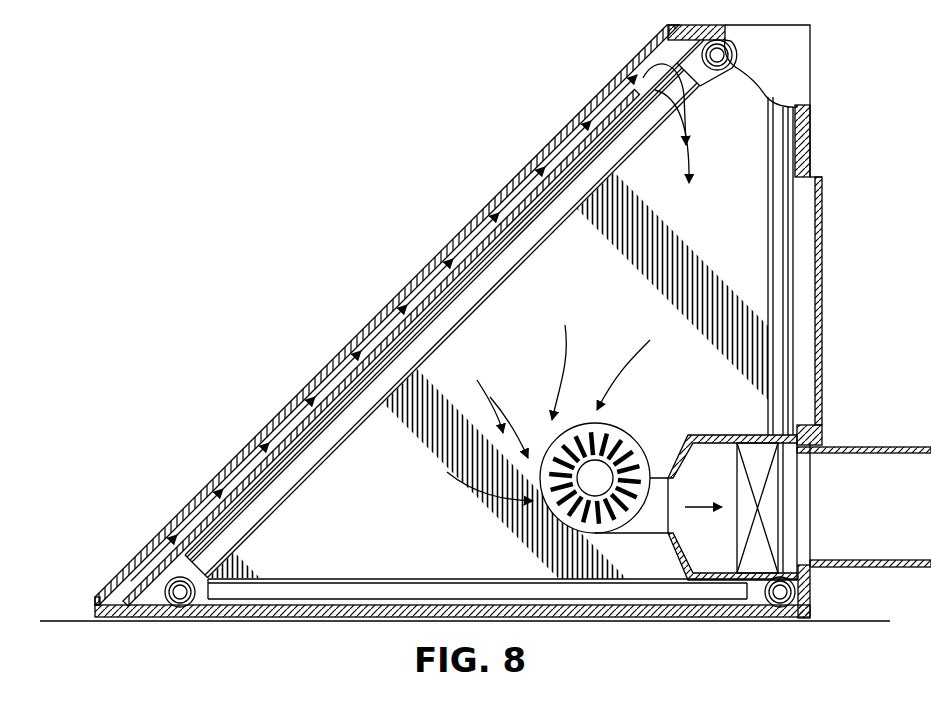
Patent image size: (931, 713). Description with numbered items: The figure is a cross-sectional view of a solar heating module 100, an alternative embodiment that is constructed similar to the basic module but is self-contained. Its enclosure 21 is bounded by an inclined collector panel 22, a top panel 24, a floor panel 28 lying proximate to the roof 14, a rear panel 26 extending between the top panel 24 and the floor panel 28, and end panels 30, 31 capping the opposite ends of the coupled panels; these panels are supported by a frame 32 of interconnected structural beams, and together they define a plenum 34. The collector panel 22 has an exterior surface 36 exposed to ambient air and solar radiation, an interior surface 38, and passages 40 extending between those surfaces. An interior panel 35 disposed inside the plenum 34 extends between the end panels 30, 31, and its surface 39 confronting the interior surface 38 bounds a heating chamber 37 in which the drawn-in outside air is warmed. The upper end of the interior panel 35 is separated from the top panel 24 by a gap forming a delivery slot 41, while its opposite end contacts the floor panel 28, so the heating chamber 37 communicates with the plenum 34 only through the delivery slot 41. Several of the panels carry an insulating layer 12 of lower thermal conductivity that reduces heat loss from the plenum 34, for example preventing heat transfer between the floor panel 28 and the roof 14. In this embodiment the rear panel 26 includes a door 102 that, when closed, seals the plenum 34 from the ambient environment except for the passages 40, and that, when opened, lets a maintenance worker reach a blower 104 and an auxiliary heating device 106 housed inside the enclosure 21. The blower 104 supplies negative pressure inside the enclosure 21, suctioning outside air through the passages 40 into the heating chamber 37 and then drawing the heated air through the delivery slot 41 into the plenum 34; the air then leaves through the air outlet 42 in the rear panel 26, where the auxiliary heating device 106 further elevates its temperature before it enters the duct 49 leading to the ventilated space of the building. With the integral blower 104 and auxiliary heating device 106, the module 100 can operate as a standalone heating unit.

The solar heating module 100 is at (240, 141).
The insulating layer 12 is at (512, 309).
The roof 14 is at (95, 611).
The enclosure 21 is at (384, 328).
The collector panel 22 is at (387, 315).
The top panel 24 is at (684, 27).
The rear panel 26 is at (812, 149).
The floor panel 28 is at (510, 612).
The end panel 30 is at (770, 62).
The end panel 31 is at (734, 232).
The frame 32 is at (643, 137).
The plenum 34 is at (603, 311).
The interior panel 35 is at (310, 440).
The exterior surface 36 is at (208, 485).
The heating chamber 37 is at (387, 315).
The interior surface 38 is at (461, 309).
The surface 39 is at (162, 563).
The passages 40 is at (370, 342).
The delivery slot 41 is at (612, 87).
The air outlet 42 is at (798, 452).
The duct 49 is at (850, 447).
The door 102 is at (822, 266).
The blower 104 is at (617, 424).
The auxiliary heating device 106 is at (737, 531).